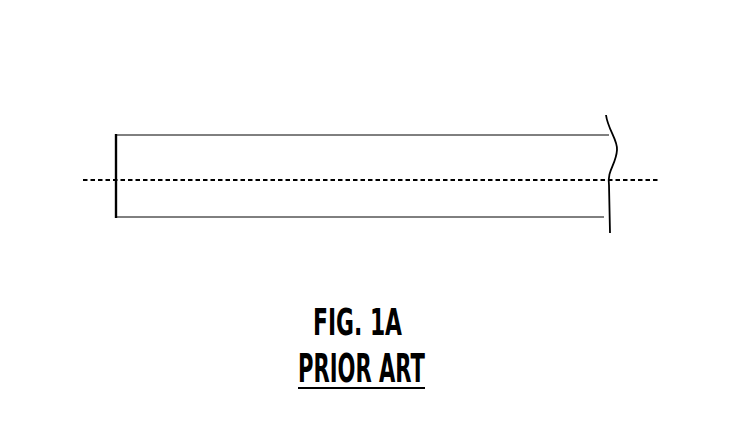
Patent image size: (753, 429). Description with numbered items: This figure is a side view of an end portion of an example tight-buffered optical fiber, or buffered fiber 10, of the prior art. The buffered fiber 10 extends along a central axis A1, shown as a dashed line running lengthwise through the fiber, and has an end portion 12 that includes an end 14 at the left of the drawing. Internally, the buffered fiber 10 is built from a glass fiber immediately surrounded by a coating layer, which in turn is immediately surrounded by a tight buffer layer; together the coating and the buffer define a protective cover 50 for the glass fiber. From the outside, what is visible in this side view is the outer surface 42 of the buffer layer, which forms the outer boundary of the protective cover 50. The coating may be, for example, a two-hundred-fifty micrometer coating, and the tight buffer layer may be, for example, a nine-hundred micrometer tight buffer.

The tight-buffered optical fiber 10 is at (178, 80).
The end portion 12 is at (245, 247).
The end 14 is at (116, 157).
The outer surface of buffer layer 42 is at (486, 153).
The protective cover 50 is at (353, 134).
The central axis A1 is at (647, 178).